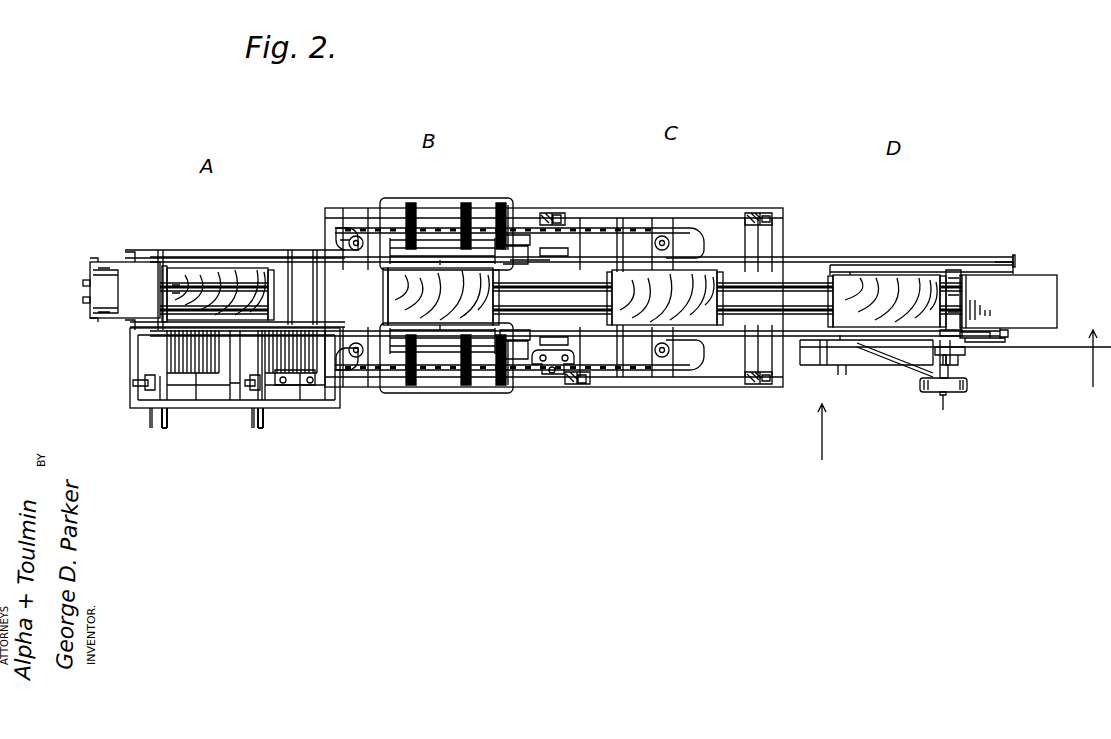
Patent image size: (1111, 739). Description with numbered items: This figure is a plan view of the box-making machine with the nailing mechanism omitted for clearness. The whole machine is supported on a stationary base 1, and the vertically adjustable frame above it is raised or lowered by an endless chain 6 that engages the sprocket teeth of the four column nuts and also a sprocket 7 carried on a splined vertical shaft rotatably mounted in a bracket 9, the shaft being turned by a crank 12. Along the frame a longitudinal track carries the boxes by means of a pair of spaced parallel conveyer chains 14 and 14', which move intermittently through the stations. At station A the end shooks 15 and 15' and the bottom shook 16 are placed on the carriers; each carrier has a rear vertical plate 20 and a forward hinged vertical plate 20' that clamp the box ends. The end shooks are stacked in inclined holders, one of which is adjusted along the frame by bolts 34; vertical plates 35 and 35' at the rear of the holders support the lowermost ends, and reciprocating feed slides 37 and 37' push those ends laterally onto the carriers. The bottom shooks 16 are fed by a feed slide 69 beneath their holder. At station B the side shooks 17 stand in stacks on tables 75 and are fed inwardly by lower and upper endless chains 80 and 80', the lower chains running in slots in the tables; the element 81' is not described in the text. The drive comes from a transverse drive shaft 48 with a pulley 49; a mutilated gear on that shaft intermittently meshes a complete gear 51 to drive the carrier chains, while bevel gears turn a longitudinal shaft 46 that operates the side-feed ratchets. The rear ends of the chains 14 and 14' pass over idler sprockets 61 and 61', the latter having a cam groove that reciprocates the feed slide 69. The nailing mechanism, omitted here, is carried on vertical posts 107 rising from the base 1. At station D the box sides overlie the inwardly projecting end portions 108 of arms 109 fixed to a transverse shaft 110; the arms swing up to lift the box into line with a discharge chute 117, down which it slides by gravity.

The stationary base 1 is at (535, 218).
The endless chain 6 is at (597, 228).
The sprocket 7 is at (645, 372).
The bracket 9 is at (540, 352).
The crank 12 is at (556, 378).
The conveyer chain 14 is at (581, 261).
The conveyer chain 14' is at (561, 371).
The end shook 15 is at (235, 386).
The end shook 15' is at (291, 426).
The bottom shook 16 is at (228, 288).
The side shook 17 is at (440, 262).
The vertical plate 20 is at (341, 273).
The vertical plate 20' is at (564, 238).
The bolts 34 is at (293, 378).
The vertical plate 35 is at (122, 402).
The vertical plate 35' is at (243, 410).
The feed slide 37 is at (152, 434).
The feed slide 37' is at (256, 440).
The longitudinal shaft 46 is at (842, 375).
The drive shaft 48 is at (943, 395).
The pulley 49 is at (955, 360).
The complete gear 51 is at (920, 372).
The idler sprocket 61 is at (61, 279).
The idler sprocket 61' is at (61, 317).
The feed slide 69 is at (125, 291).
The table 75 is at (431, 213).
The lower endless chain 80 is at (436, 322).
The upper endless chain 80' is at (460, 213).
The lower clamp bar 81' is at (442, 384).
The vertical post 107 is at (753, 214).
The end portion 108 is at (896, 270).
The arm 109 is at (960, 268).
The transverse shaft 110 is at (1016, 268).
The discharge chute 117 is at (1008, 308).